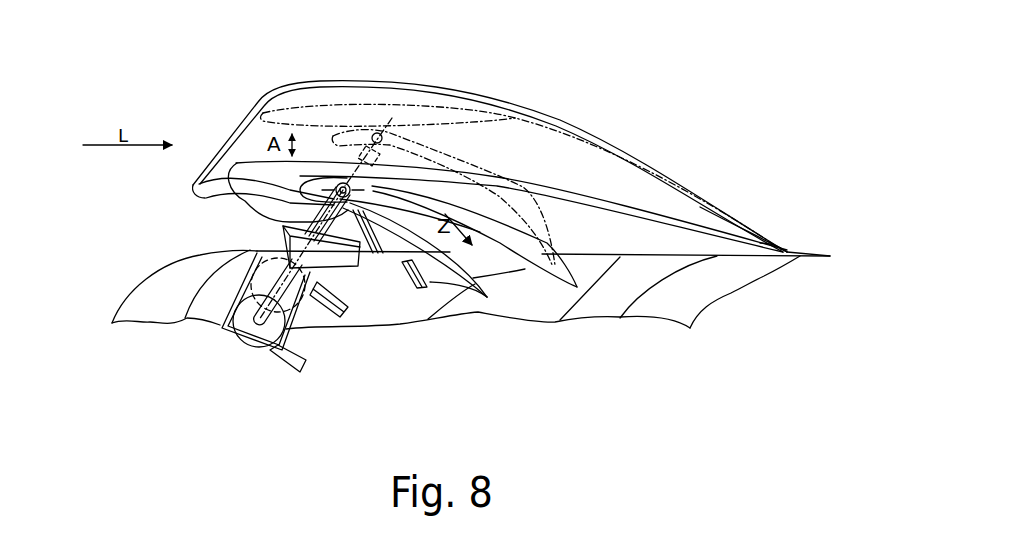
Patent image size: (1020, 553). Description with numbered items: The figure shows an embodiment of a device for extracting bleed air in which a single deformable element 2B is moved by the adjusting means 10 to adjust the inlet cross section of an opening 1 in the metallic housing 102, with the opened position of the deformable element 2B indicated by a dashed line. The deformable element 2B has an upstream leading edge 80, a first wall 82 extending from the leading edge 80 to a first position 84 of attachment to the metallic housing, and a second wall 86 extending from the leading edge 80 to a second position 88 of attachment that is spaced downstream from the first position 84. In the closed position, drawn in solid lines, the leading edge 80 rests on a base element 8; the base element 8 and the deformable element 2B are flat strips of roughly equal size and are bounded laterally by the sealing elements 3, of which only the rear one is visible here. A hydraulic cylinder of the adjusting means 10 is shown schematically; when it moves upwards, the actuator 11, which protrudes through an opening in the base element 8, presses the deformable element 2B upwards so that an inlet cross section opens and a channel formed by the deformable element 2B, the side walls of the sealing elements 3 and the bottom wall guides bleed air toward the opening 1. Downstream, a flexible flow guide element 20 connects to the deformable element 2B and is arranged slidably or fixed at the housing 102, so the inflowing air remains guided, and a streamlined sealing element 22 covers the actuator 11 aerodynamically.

The opening 1 is at (493, 259).
The sealing element 3 is at (232, 133).
The base element 8 is at (238, 197).
The adjusting means 10 is at (302, 355).
The actuator 11 is at (300, 263).
The flow guide element 20 is at (597, 208).
The streamlined sealing element 22 is at (283, 246).
The upstream leading edge 80 is at (261, 172).
The first wall 82 is at (547, 245).
The first position of attachment 84 is at (577, 270).
The second wall 86 is at (497, 177).
The second position of attachment 88 is at (797, 246).
The metallic housing 102 is at (733, 268).
The deformable element 2B is at (310, 172).